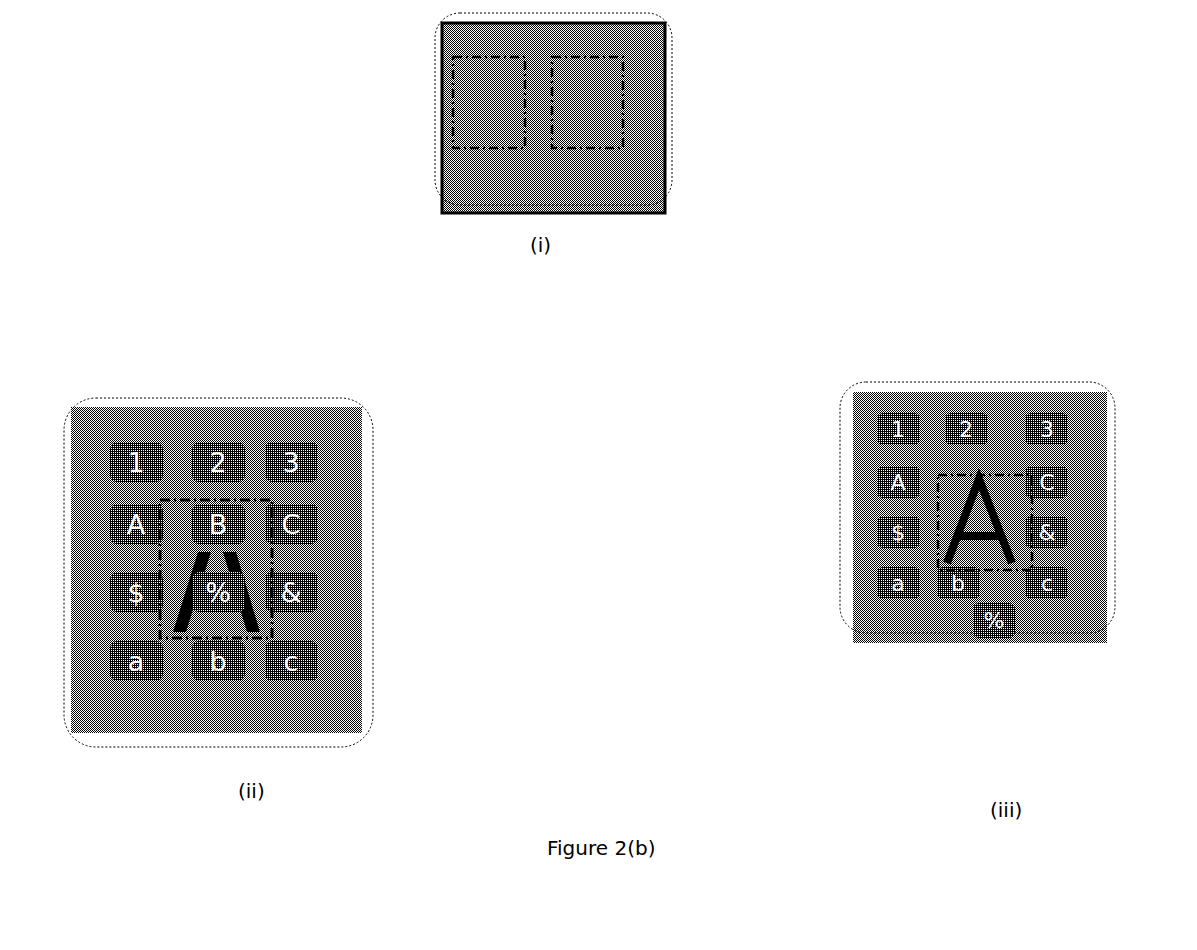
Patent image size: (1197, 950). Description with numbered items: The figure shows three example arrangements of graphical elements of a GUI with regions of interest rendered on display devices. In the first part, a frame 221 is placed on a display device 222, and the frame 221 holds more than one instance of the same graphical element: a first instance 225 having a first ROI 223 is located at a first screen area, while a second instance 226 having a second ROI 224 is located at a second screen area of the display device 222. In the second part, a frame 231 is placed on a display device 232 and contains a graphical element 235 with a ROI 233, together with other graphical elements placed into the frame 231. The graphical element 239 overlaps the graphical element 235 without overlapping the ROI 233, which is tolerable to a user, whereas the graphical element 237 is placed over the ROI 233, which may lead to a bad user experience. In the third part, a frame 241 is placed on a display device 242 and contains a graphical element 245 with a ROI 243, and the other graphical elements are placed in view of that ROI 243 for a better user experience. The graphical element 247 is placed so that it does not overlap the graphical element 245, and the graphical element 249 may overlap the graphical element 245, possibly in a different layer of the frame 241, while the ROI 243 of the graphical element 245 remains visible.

The frame 221 is at (627, 215).
The display device 222 is at (672, 58).
The first ROI 223 is at (485, 83).
The second ROI 224 is at (598, 112).
The first instance of graphical element 225 is at (453, 140).
The second instance of graphical element 226 is at (603, 150).
The frame 231 is at (218, 405).
The display device 232 is at (373, 477).
The ROI 233 is at (287, 650).
The graphical element 235 is at (273, 548).
The graphical element 237 is at (268, 613).
The graphical element 239 is at (302, 597).
The frame 241 is at (940, 392).
The display device 242 is at (1075, 380).
The ROI 243 is at (1005, 560).
The graphical element 245 is at (943, 560).
The graphical element 247 is at (997, 632).
The graphical element 249 is at (1052, 532).